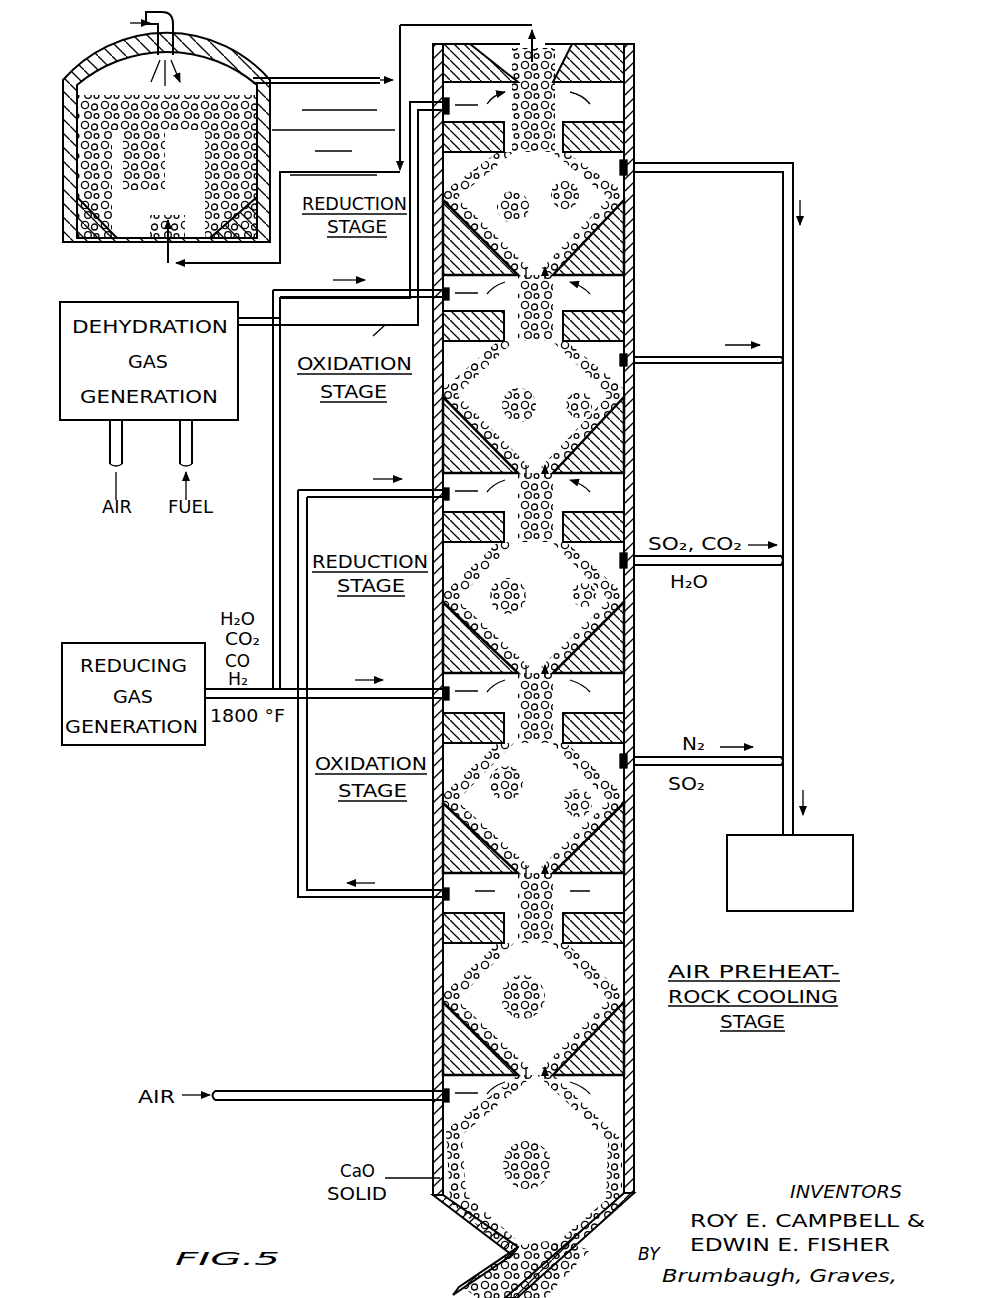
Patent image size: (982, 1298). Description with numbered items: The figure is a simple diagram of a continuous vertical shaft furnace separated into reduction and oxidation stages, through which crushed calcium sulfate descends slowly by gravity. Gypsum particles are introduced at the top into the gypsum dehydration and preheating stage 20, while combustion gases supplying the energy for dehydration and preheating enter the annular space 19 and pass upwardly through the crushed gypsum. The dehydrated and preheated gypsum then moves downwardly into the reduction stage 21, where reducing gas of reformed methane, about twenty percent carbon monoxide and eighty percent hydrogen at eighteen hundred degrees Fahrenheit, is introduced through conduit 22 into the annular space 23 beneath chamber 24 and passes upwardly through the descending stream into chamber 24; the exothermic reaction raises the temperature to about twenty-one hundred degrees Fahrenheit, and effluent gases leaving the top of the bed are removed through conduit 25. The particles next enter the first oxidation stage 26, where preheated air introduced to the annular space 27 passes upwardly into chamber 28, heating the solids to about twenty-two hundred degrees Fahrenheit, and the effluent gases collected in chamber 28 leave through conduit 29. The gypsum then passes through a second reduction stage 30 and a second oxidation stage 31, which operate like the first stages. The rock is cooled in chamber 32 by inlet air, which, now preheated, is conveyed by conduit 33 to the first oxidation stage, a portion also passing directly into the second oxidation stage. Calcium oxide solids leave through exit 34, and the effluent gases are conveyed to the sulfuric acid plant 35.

The annular space 19 is at (530, 671).
The gypsum dehydration and preheating stage 20 is at (220, 88).
The reduction stage 21 is at (525, 202).
The conduit 22 is at (303, 288).
The annular space 23 is at (615, 287).
The chamber 24 is at (568, 222).
The conduit 25 is at (796, 180).
The first oxidation stage 26 is at (527, 392).
The annular space 27 is at (621, 492).
The chamber 28 is at (621, 432).
The conduit 29 is at (767, 364).
The second reduction stage 30 is at (431, 615).
The second oxidation stage 31 is at (433, 818).
The chamber 32 is at (433, 995).
The conduit 33 is at (377, 900).
The exit 34 is at (475, 1272).
The sulfuric acid plant 35 is at (853, 845).